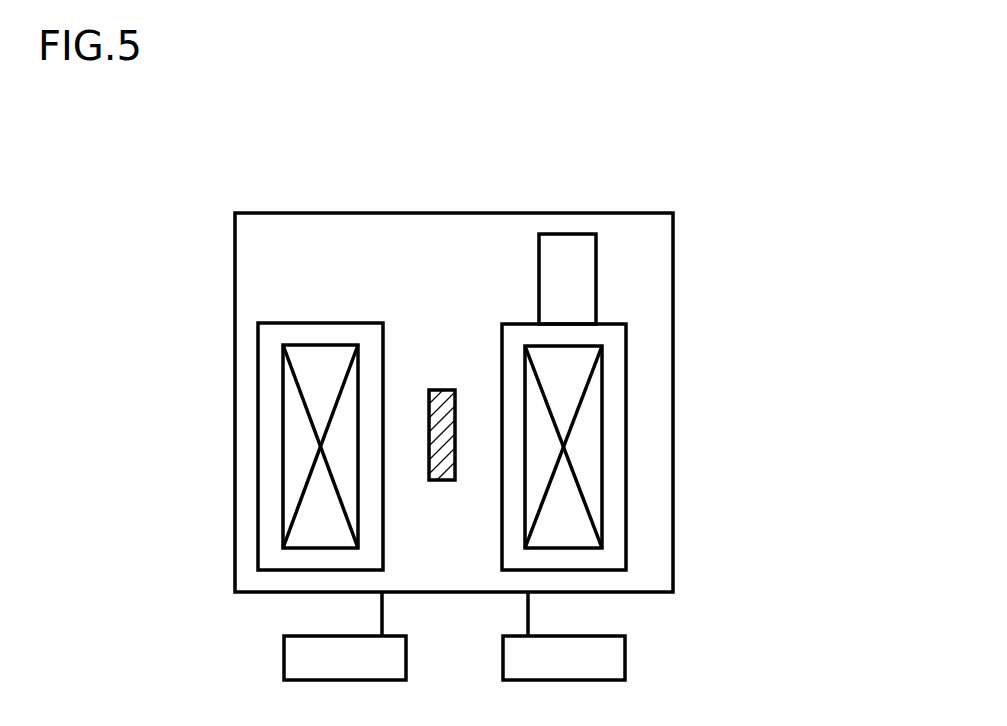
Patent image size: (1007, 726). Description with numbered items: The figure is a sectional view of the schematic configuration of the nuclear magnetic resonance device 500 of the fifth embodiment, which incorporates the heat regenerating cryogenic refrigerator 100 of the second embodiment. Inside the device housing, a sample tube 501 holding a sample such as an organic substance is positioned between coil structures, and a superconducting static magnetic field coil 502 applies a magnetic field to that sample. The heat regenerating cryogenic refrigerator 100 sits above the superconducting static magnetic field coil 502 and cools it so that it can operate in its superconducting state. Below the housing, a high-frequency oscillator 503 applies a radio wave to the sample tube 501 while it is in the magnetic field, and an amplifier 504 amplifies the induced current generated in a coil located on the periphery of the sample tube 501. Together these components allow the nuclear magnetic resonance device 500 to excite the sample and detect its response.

The nuclear magnetic resonance device 500 is at (777, 208).
The heat regenerating cryogenic refrigerator 100 is at (596, 273).
The sample tube 501 is at (441, 390).
The superconducting static magnetic field coil 502 is at (602, 405).
The high-frequency oscillator 503 is at (284, 655).
The amplifier 504 is at (626, 657).